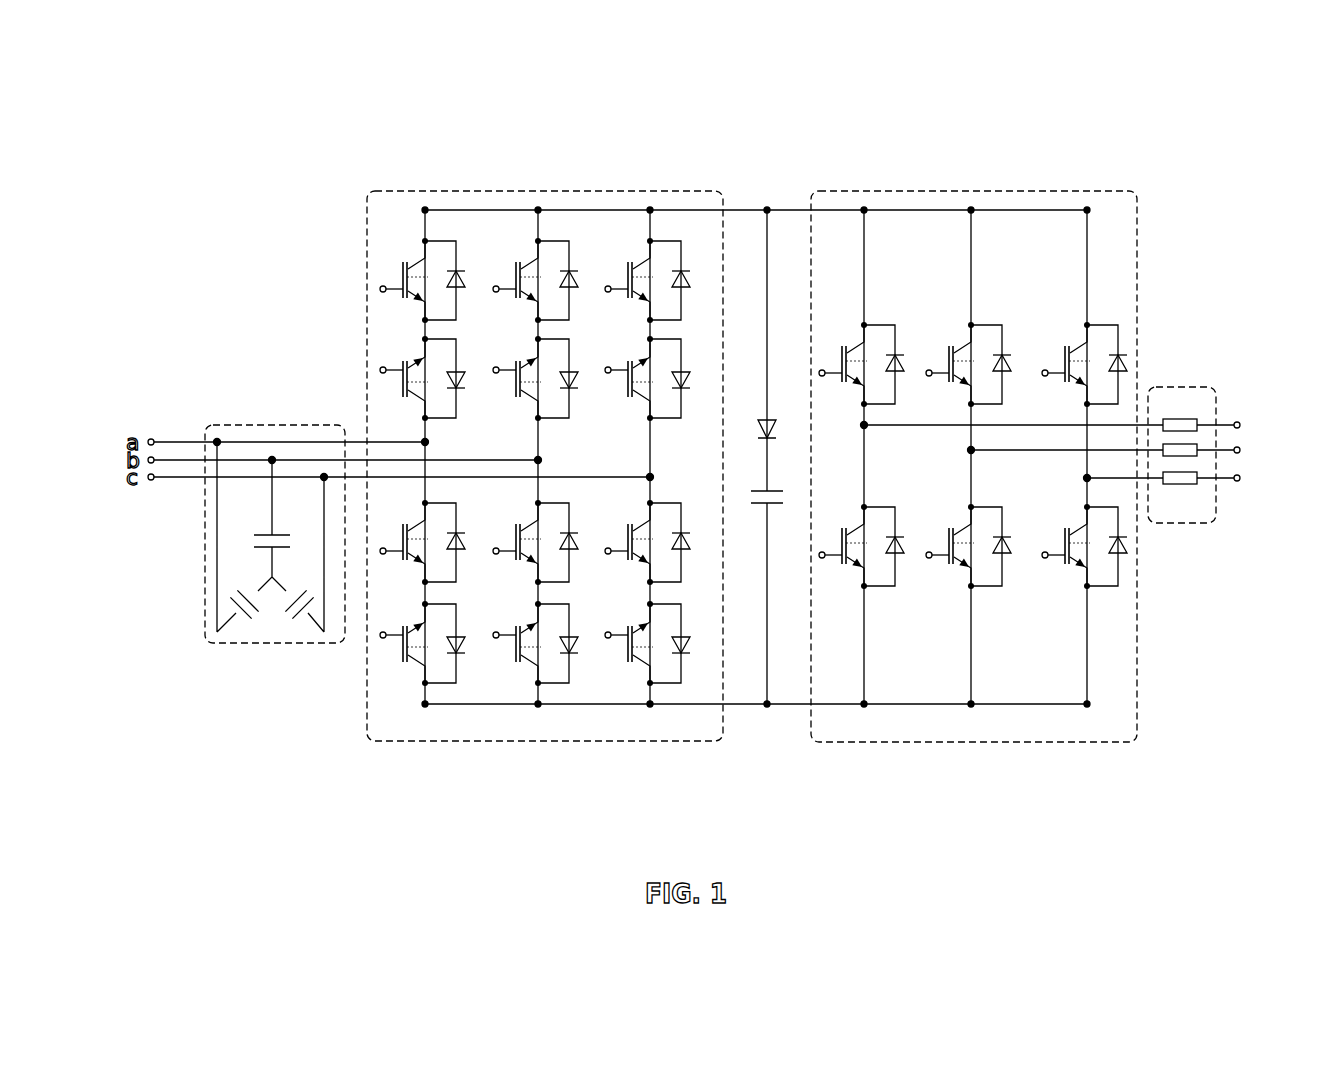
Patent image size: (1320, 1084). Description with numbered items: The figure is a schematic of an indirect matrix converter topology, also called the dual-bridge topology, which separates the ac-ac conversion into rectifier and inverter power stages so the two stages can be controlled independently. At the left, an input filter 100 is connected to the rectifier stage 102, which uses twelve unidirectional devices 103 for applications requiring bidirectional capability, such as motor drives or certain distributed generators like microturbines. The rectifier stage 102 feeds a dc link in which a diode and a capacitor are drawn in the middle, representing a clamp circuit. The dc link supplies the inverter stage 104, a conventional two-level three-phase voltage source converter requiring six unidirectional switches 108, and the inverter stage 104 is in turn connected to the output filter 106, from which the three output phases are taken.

The input filter 100 is at (205, 582).
The rectifier stage 102 is at (470, 191).
The unidirectional devices 103 is at (405, 276).
The inverter stage 104 is at (980, 191).
The output filter 106 is at (1190, 387).
The unidirectional switches 108 is at (1103, 325).